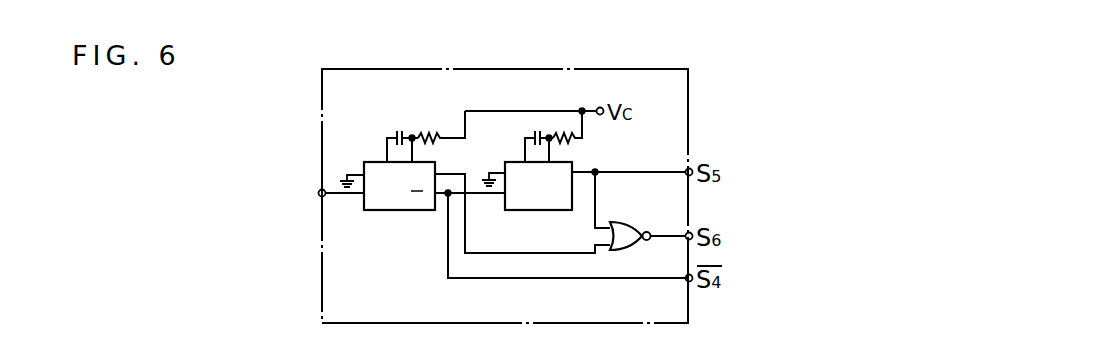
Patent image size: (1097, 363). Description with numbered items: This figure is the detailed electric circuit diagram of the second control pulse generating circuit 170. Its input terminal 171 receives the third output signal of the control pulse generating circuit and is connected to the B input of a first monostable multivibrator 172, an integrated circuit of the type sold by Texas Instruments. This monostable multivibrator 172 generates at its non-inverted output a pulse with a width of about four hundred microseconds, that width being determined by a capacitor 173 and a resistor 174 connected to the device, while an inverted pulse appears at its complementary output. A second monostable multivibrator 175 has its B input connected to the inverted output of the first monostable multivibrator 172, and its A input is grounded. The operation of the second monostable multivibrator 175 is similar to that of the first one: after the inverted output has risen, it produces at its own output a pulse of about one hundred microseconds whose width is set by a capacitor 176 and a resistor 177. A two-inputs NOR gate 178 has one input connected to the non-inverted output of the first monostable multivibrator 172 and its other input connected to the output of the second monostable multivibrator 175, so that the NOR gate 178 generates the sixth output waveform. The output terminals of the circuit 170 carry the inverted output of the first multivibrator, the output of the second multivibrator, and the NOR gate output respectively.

The second control pulse generating circuit 170 is at (571, 69).
The input terminal 171 is at (318, 192).
The monostable multivibrator 172 is at (391, 211).
The capacitor 173 is at (388, 131).
The resistor 174 is at (439, 131).
The monostable multivibrator 175 is at (565, 211).
The capacitor 176 is at (540, 132).
The resistor 177 is at (566, 142).
The two-inputs NOR gate 178 is at (636, 213).